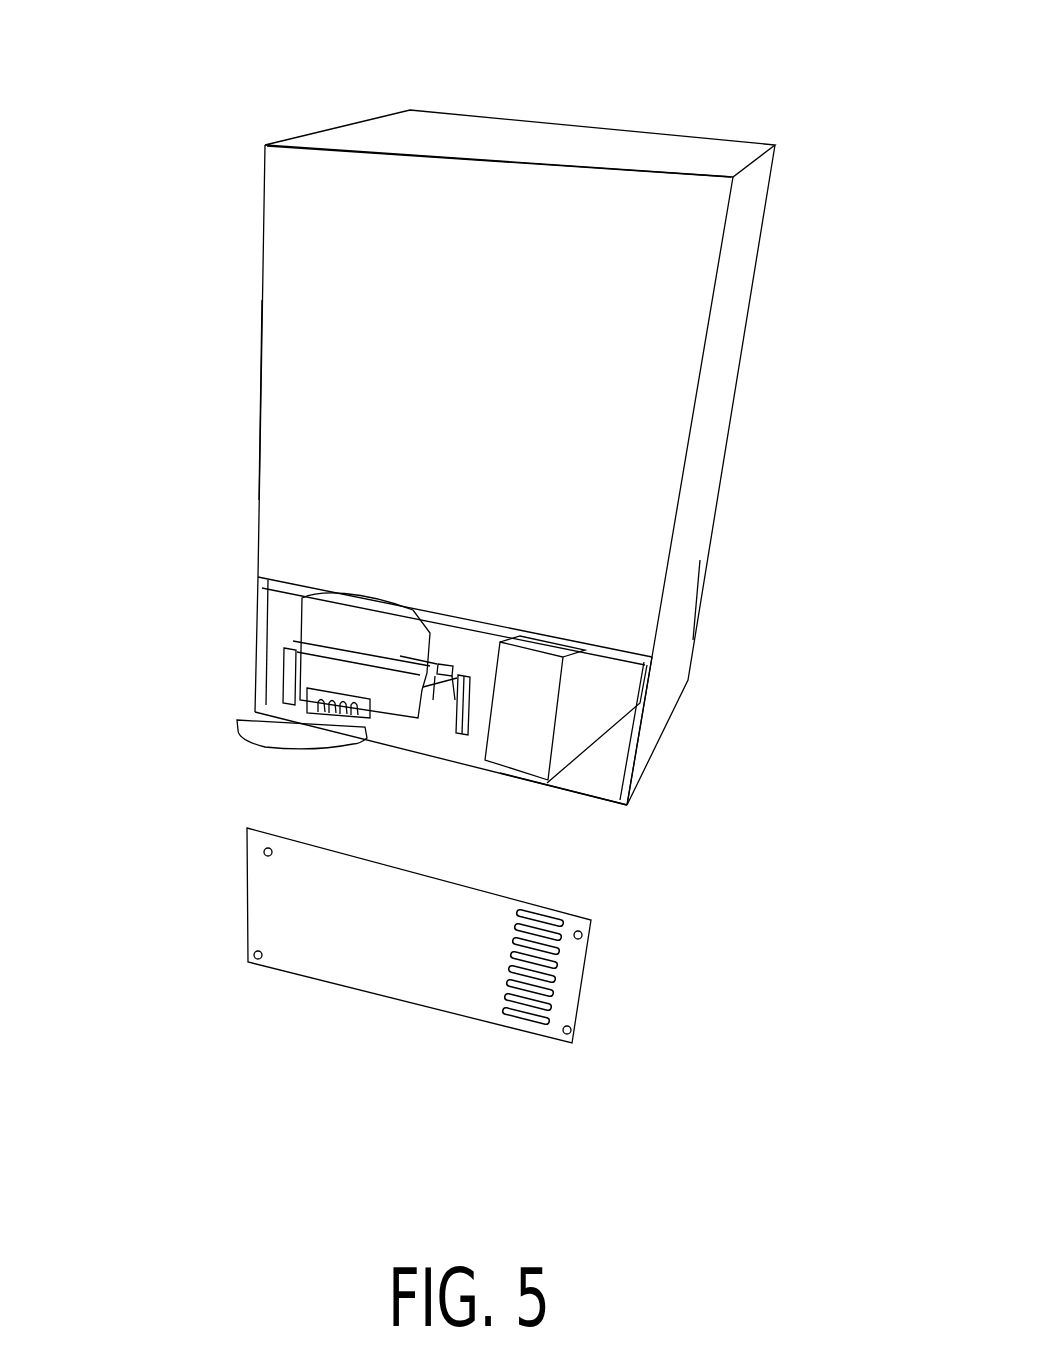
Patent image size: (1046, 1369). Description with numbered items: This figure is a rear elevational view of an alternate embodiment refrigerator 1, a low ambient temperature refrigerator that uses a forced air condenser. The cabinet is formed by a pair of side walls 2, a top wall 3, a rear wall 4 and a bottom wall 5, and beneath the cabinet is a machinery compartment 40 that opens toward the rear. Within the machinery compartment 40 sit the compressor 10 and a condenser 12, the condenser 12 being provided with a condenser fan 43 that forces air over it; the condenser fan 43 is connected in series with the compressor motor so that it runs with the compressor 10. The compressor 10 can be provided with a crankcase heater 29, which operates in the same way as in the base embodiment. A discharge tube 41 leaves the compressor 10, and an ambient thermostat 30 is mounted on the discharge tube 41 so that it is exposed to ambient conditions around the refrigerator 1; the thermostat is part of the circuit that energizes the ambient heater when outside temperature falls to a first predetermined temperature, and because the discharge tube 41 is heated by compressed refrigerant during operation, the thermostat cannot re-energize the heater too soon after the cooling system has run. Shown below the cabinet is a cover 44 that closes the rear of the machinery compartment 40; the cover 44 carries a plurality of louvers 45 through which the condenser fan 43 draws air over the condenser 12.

The refrigerator 1 is at (282, 131).
The side walls 2 is at (693, 496).
The top wall 3 is at (445, 145).
The rear wall 4 is at (318, 373).
The bottom wall 5 is at (609, 800).
The compressor 10 is at (332, 622).
The condenser 12 is at (530, 740).
The crankcase heater 29 is at (340, 690).
The ambient thermostat 30 is at (443, 662).
The machinery compartment 40 is at (432, 737).
The discharge tube 41 is at (433, 688).
The condenser fan 43 is at (480, 688).
The cover 44 is at (360, 940).
The louvers 45 is at (530, 1012).